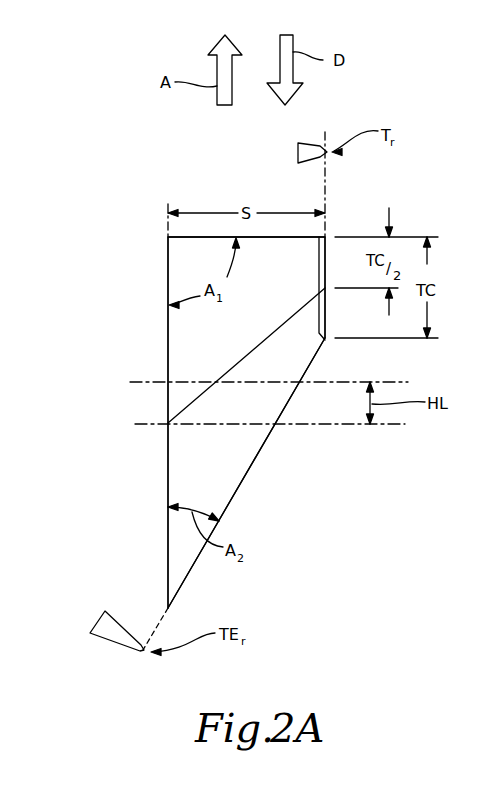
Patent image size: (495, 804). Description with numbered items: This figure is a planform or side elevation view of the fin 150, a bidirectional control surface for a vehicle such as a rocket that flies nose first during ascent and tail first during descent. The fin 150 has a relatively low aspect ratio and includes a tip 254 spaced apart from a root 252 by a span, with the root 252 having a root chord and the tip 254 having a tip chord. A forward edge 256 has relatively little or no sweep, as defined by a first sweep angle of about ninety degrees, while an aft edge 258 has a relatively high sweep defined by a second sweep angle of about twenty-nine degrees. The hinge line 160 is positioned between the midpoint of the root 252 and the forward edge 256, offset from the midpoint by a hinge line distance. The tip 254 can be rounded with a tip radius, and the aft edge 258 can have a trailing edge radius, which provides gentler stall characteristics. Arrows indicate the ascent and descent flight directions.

The fin 150 is at (120, 237).
The hinge line 160 is at (155, 381).
The root 252 is at (168, 283).
The tip 254 is at (327, 260).
The forward edge 256 is at (213, 237).
The aft edge 258 is at (178, 592).